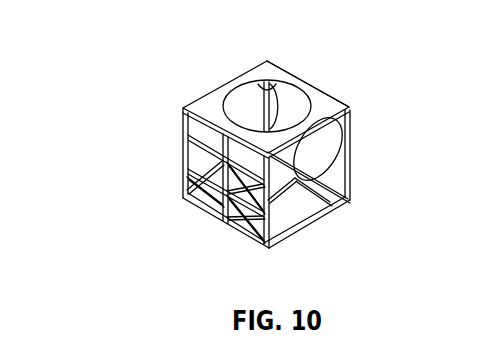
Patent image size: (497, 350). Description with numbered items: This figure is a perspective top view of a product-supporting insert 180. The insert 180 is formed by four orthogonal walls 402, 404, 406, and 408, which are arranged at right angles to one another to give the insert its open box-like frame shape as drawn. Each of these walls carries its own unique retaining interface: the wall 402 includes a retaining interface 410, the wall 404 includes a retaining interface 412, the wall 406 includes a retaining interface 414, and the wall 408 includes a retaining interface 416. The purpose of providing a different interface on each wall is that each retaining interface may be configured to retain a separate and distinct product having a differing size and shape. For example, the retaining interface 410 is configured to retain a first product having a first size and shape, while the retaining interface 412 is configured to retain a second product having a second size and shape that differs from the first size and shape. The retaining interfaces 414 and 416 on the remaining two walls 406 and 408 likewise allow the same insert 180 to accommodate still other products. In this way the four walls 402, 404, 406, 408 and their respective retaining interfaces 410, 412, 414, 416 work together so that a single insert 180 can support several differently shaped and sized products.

The product-supporting insert 180 is at (169, 64).
The orthogonal wall 402 is at (350, 190).
The orthogonal wall 404 is at (331, 108).
The orthogonal wall 406 is at (222, 214).
The orthogonal wall 408 is at (340, 212).
The retaining interface 410 is at (334, 165).
The retaining interface 412 is at (277, 78).
The retaining interface 414 is at (197, 187).
The retaining interface 416 is at (297, 206).